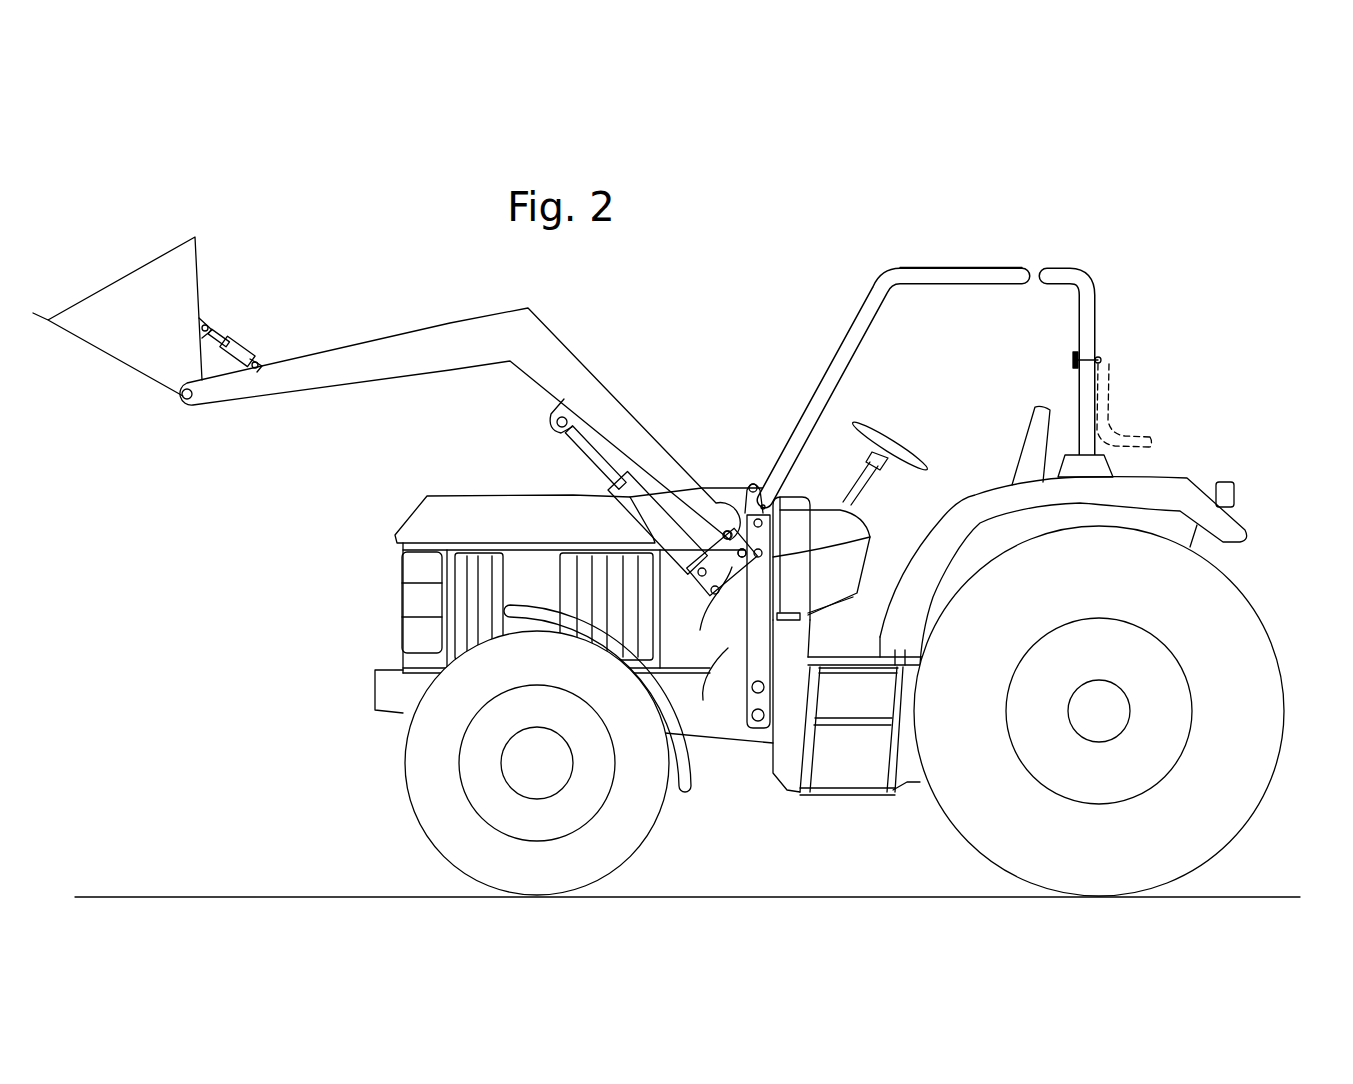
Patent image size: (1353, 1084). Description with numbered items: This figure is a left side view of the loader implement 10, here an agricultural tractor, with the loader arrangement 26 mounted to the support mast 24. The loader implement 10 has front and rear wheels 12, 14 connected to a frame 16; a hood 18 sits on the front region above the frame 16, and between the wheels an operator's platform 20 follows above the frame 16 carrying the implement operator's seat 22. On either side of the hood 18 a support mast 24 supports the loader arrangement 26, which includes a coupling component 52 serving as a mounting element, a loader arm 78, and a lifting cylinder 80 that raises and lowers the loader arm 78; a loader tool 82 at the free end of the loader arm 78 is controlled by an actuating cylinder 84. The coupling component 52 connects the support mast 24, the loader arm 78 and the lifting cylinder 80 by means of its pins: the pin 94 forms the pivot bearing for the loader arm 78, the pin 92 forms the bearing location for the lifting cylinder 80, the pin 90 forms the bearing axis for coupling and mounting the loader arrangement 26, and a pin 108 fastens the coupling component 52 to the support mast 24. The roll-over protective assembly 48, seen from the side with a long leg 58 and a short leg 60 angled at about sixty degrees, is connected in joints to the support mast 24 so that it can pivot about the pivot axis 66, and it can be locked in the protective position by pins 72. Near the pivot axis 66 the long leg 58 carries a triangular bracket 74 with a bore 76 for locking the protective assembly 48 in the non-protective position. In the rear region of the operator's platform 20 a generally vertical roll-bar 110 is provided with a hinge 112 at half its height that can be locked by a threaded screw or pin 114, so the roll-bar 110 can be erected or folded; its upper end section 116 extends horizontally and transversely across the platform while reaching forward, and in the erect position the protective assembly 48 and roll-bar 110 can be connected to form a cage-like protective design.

The loader implement 10 is at (783, 285).
The front wheels 12 is at (422, 792).
The rear wheels 14 is at (1241, 811).
The frame 16 is at (727, 703).
The hood 18 is at (448, 508).
The operator's platform 20 is at (868, 760).
The implement operator's seat 22 is at (1022, 458).
The support mast 24 is at (740, 730).
The loader arrangement 26 is at (397, 353).
The roll-over protective assembly 48 is at (843, 375).
The coupling component 52 is at (703, 700).
The long leg 58 is at (870, 292).
The short leg 60 is at (988, 279).
The pivot axis 66 is at (727, 505).
The pins 72 is at (813, 557).
The bracket 74 is at (753, 480).
The bore 76 is at (763, 507).
The loader arm 78 is at (653, 457).
The lifting cylinder 80 is at (633, 498).
The loader tool 82 is at (128, 345).
The actuating cylinder 84 is at (240, 347).
The pin 90 is at (706, 614).
The pin 92 is at (700, 578).
The pin 94 is at (724, 528).
The pin 108 is at (868, 760).
The roll-bar 110 is at (1089, 326).
The hinge 112 is at (1100, 355).
The pin 114 is at (1072, 351).
The upper end section 116 is at (1067, 277).